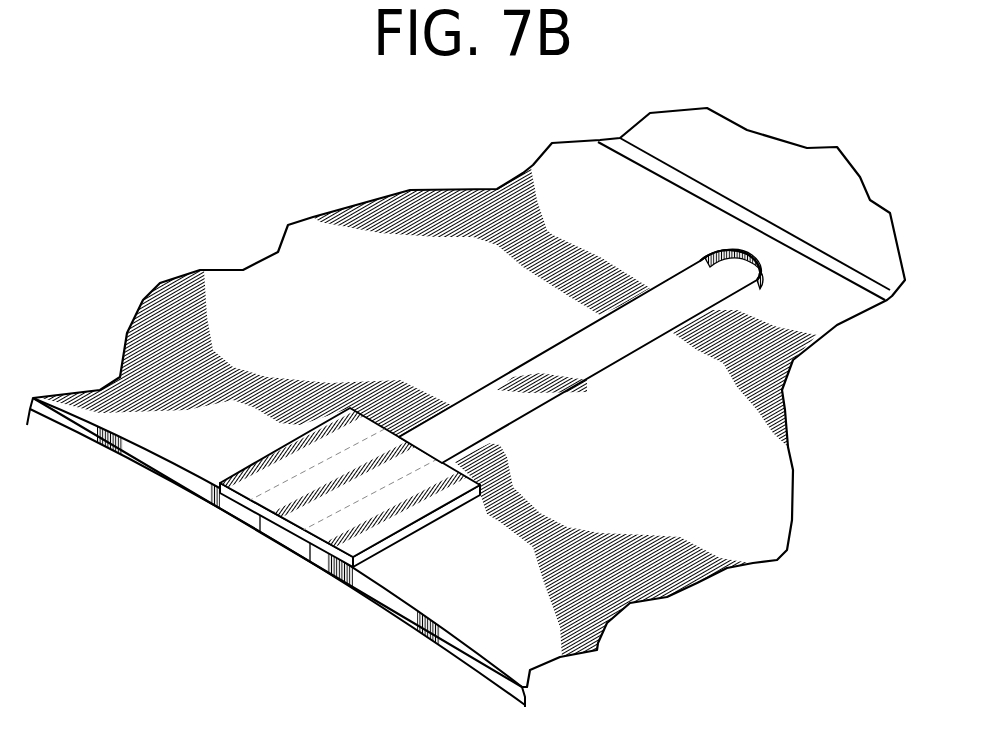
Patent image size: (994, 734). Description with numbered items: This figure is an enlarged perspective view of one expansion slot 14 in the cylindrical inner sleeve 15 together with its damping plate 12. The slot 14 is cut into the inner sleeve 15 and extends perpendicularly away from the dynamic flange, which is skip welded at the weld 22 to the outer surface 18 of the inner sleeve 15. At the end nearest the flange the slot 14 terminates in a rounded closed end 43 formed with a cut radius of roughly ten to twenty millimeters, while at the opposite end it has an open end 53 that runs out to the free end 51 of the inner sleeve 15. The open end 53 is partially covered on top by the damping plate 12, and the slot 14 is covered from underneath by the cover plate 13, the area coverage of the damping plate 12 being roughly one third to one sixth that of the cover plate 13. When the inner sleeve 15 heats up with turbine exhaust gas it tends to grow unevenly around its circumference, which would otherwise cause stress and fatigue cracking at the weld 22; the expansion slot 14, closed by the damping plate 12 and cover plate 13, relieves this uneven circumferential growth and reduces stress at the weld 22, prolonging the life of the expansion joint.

The damping plate 12 is at (247, 480).
The cover plate 13 is at (240, 530).
The expansion slot 14 is at (577, 360).
The inner sleeve 15 is at (763, 520).
The outer surface 18 is at (423, 587).
The weld 22 is at (847, 263).
The closed end 43 is at (737, 253).
The free end 51 is at (330, 563).
The open end 53 is at (288, 537).